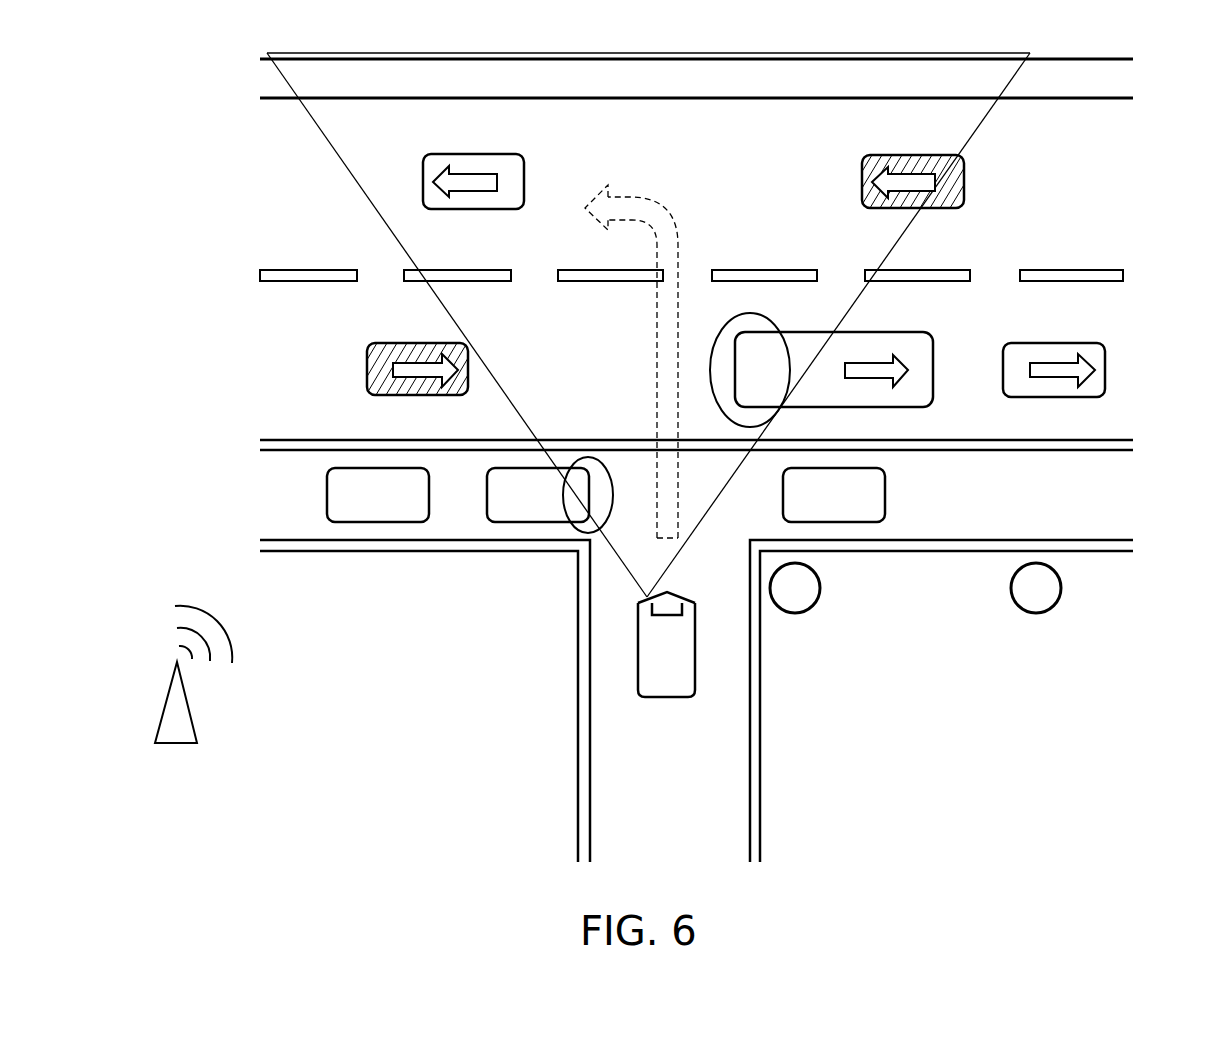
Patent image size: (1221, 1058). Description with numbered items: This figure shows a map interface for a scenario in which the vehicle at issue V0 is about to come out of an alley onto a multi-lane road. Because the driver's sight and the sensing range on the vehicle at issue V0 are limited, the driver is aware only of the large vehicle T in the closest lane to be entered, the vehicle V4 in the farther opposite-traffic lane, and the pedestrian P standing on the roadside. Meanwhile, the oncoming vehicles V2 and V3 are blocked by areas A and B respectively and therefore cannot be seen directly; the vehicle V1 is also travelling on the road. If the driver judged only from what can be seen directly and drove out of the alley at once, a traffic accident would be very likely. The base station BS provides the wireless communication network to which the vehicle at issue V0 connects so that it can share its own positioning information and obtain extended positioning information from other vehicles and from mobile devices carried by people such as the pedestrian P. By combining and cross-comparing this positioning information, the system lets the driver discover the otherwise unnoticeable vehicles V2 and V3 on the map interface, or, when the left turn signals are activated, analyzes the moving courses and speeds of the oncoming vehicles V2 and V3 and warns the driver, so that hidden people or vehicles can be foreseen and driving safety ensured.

The vehicle at issue V0 is at (668, 700).
The vehicle V1 is at (1105, 385).
The vehicle V2 is at (965, 185).
The vehicle V3 is at (367, 372).
The vehicle V4 is at (490, 165).
The large vehicle T is at (932, 362).
The area A is at (748, 314).
The area B is at (576, 530).
The pedestrian P is at (795, 615).
The base station BS is at (197, 722).